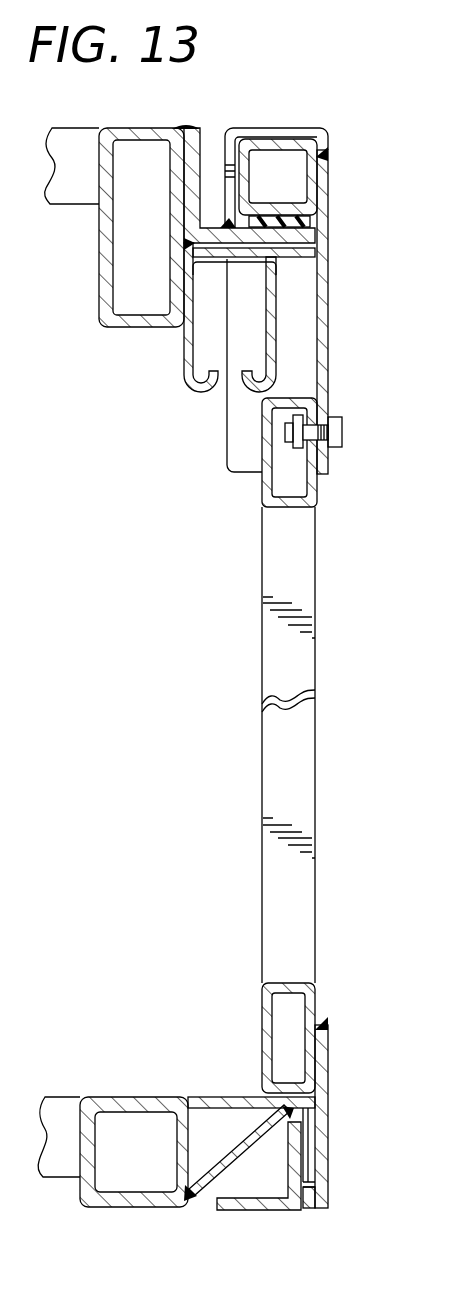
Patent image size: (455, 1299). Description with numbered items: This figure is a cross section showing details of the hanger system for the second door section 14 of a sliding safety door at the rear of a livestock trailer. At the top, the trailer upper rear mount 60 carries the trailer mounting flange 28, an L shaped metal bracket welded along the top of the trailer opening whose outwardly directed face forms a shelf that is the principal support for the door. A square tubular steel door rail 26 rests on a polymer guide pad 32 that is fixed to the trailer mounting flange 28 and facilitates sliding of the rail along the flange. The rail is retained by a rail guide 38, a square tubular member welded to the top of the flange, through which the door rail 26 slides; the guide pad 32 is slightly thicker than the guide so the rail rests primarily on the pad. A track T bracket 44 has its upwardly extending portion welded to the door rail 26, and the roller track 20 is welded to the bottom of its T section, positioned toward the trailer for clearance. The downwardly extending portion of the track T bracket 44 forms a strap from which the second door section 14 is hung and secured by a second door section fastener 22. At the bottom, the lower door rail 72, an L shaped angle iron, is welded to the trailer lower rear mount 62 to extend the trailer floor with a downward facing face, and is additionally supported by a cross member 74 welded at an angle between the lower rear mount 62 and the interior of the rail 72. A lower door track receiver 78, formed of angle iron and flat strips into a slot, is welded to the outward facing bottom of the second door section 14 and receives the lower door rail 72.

The second door section 14 is at (302, 581).
The roller track 20 is at (277, 309).
The second door section fastener 22 is at (343, 425).
The door rail 26 is at (320, 153).
The trailer mounting flange 28 is at (200, 136).
The polymer guide pad 32 is at (312, 222).
The rail guide 38 is at (283, 128).
The track T bracket 44 is at (329, 358).
The trailer upper rear mount 60 is at (115, 329).
The trailer lower rear mount 62 is at (108, 1096).
The lower door rail 72 is at (213, 1096).
The cross member 74 is at (210, 1190).
The lower door track receiver 78 is at (329, 1083).